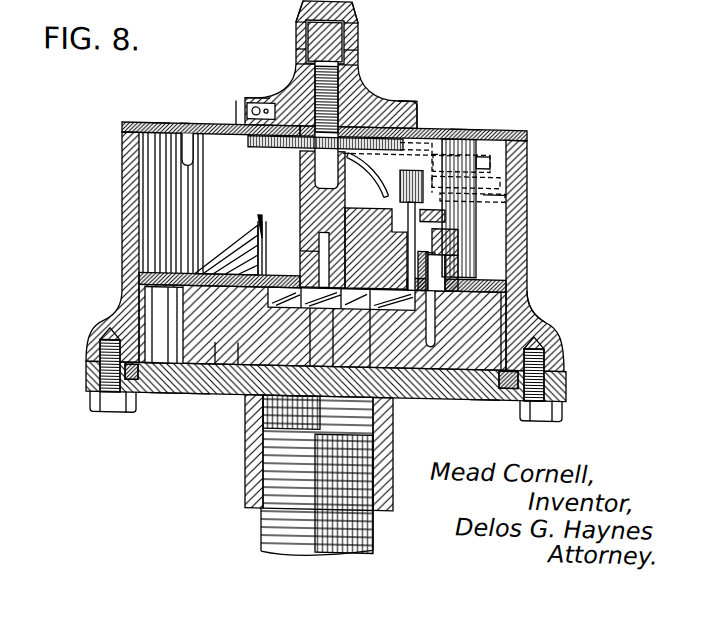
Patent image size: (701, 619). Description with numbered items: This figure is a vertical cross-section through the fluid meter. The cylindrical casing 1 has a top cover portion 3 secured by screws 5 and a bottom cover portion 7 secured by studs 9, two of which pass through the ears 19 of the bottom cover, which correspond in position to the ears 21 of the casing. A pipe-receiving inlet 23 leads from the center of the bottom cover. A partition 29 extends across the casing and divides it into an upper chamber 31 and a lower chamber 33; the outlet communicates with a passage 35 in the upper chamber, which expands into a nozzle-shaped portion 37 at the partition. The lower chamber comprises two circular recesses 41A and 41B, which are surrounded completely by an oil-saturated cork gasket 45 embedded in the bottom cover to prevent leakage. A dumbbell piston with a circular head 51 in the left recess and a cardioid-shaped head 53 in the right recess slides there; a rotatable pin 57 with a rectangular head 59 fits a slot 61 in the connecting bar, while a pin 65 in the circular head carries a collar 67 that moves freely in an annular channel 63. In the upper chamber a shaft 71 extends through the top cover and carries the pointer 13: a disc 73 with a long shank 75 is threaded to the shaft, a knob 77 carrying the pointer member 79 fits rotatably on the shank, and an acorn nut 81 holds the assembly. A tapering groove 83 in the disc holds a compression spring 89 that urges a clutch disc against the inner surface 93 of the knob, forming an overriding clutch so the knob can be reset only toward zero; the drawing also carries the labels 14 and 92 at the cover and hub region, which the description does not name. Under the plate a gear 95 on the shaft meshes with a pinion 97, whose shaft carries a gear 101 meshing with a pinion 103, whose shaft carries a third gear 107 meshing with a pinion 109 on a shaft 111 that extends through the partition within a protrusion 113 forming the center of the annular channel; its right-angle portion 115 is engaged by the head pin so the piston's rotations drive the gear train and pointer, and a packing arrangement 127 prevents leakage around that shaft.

The cylindrical casing 1 is at (527, 234).
The top cover portion 3 is at (505, 122).
The screws 5 is at (158, 117).
The bottom cover portion 7 is at (484, 390).
The studs 9 is at (108, 413).
The rotatable handle or pointer 13 is at (170, 112).
The cover plate joint 14 is at (185, 118).
The ears 19 is at (90, 381).
The ears 21 is at (92, 345).
The pipe-receiving inlet 23 is at (262, 497).
The partition 29 is at (160, 273).
The upper chamber 31 is at (163, 199).
The lower chamber 33 is at (182, 391).
The passage 35 is at (272, 187).
The nozzle-shaped portion 37 is at (250, 242).
The circular recess or cylinder 41A is at (160, 309).
The circular recess or cylinder 41B is at (527, 309).
The oil-saturated cork gasket 45 is at (132, 395).
The circular head or lobe 51 is at (216, 390).
The cardioid-shaped head or lobe 53 is at (430, 343).
The rotatable pin 57 is at (318, 236).
The rectangular head 59 is at (240, 389).
The slot 61 is at (390, 394).
The annular channel 63 is at (458, 225).
The pin 65 is at (458, 391).
The collar 67 is at (450, 243).
The shaft 71 is at (340, 85).
The disc 73 is at (392, 101).
The shank 75 is at (358, 57).
The knob 77 is at (293, 76).
The pointer member 79 is at (237, 97).
The acorn nut 81 is at (346, 5).
The rectangular notch or groove 83 is at (256, 101).
The compression spring 89 is at (251, 102).
The hub 92 is at (303, 186).
The inner surface 93 is at (189, 122).
The gear 95 is at (250, 140).
The pinion 97 is at (445, 123).
The gear 101 is at (506, 152).
The pinion 103 is at (500, 168).
The third gear 107 is at (500, 190).
The pinion 109 is at (506, 197).
The shaft 111 is at (400, 184).
The protrusion 113 is at (318, 261).
The right-angle portion 115 is at (455, 255).
The packing arrangement 127 is at (270, 199).